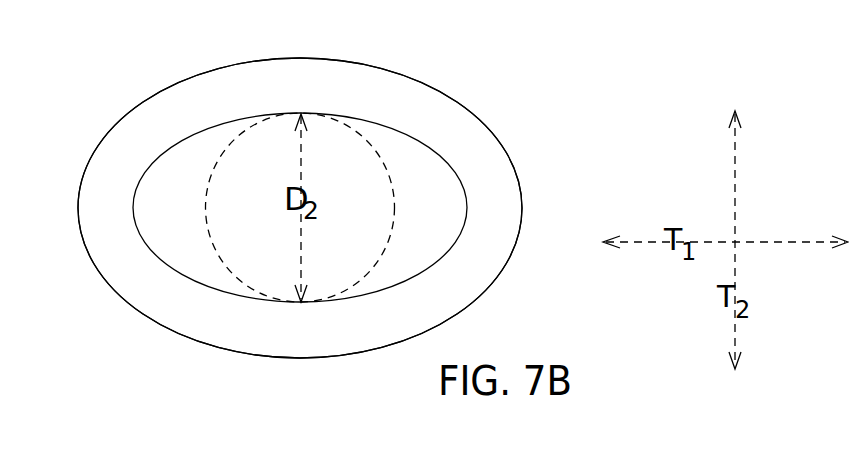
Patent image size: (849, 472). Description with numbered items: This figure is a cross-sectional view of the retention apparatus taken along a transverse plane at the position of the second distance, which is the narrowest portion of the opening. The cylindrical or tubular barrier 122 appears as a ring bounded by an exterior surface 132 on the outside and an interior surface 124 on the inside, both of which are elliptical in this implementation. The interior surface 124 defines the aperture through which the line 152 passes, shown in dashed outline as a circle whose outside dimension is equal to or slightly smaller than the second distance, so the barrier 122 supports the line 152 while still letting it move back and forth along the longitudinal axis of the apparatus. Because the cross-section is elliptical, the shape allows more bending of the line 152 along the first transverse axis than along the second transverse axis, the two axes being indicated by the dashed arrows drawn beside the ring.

The barrier 122 is at (117, 157).
The exterior surface 132 is at (476, 113).
The interior surface 124 is at (462, 185).
The line 152 is at (386, 150).